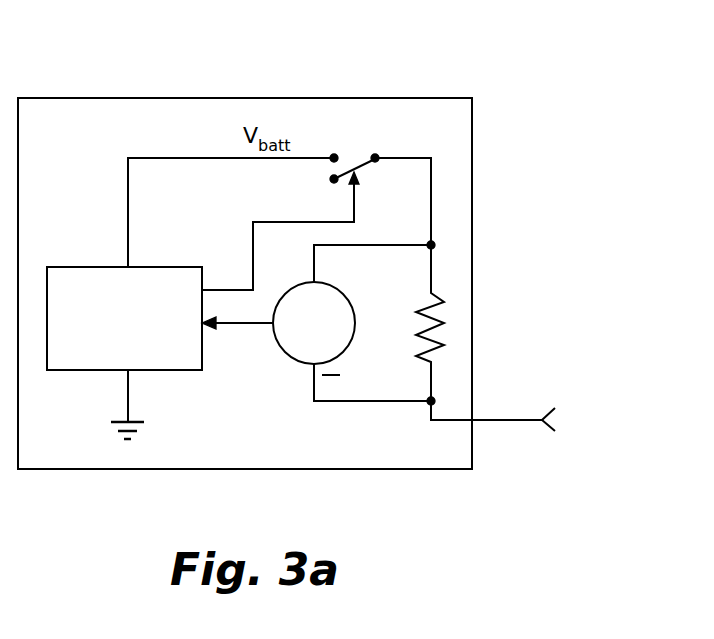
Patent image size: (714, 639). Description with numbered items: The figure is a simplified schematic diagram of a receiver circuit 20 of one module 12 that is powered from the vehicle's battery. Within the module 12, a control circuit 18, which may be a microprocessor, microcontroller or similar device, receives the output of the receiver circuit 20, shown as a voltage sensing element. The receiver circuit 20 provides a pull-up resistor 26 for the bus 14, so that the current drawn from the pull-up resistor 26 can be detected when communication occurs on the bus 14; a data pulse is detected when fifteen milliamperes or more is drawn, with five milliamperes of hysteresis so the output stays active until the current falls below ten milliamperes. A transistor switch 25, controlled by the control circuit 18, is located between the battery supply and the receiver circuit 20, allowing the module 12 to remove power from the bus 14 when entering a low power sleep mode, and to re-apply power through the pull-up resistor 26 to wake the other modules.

The module 12 is at (138, 98).
The control circuit 18 is at (78, 267).
The transistor switch 25 is at (356, 166).
The receiver circuit 20 is at (391, 409).
The pull-up resistor 26 is at (437, 293).
The bus 14 is at (518, 420).